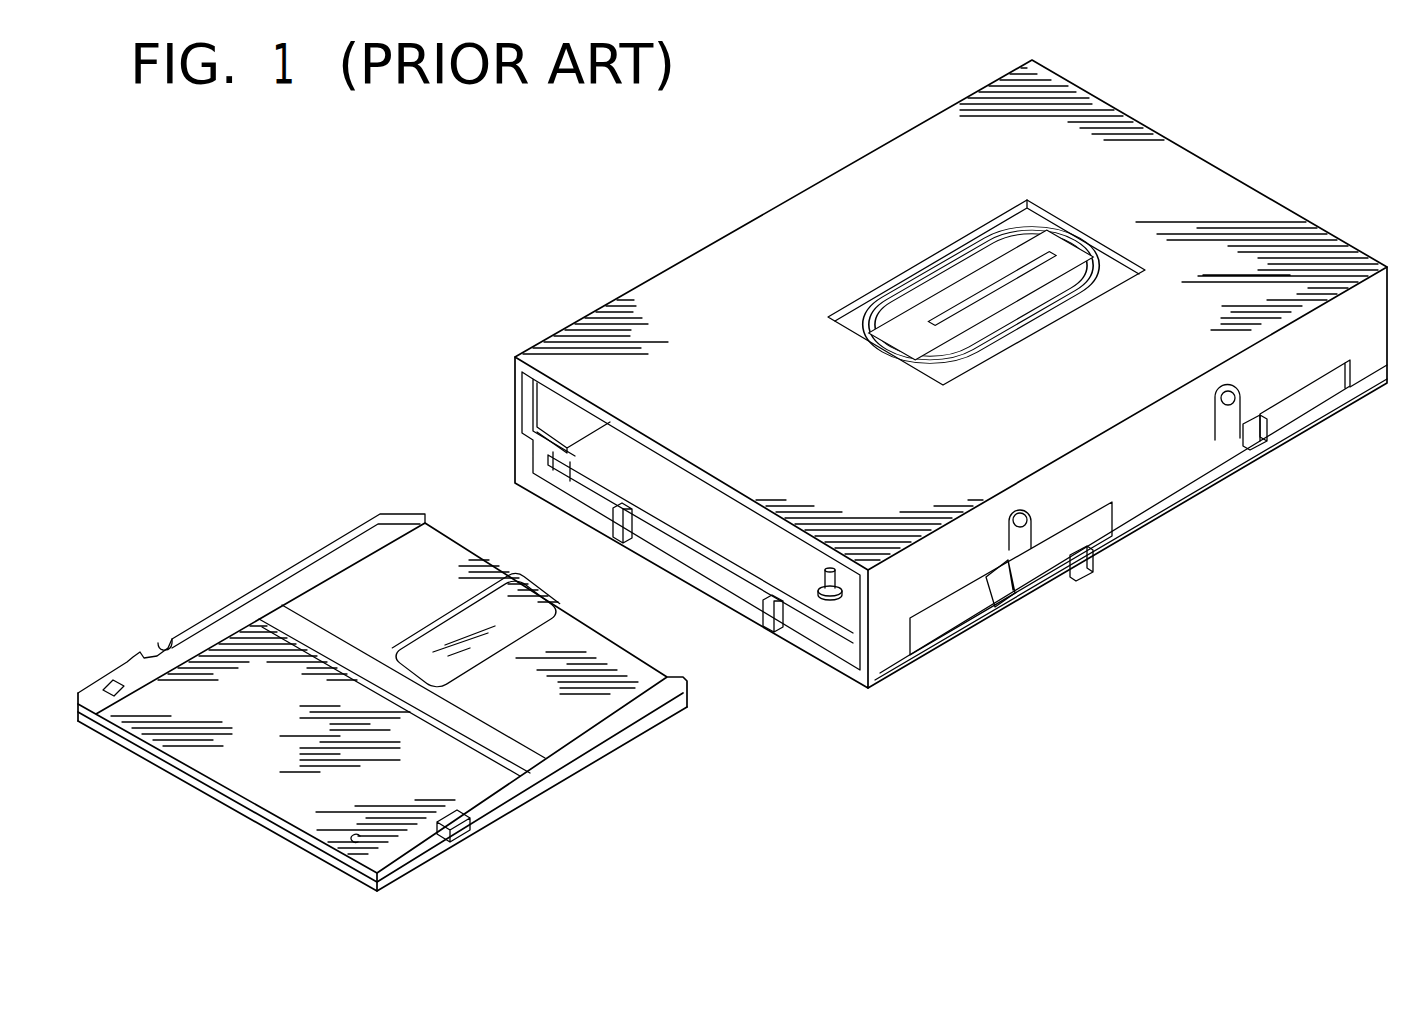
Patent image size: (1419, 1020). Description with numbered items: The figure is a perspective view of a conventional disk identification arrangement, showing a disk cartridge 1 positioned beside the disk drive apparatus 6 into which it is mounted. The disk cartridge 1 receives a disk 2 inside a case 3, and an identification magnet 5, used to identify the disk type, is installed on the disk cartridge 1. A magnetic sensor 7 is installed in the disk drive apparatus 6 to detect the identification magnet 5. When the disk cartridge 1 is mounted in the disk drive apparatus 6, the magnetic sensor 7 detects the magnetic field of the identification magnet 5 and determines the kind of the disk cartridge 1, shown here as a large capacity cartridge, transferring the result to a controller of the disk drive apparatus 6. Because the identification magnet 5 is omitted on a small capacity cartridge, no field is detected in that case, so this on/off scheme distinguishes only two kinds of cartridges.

The disk cartridge 1 is at (184, 611).
The disk 2 is at (518, 617).
The case 3 is at (355, 545).
The identification magnet 5 is at (349, 843).
The disk drive apparatus 6 is at (788, 150).
The magnetic sensor 7 is at (824, 597).